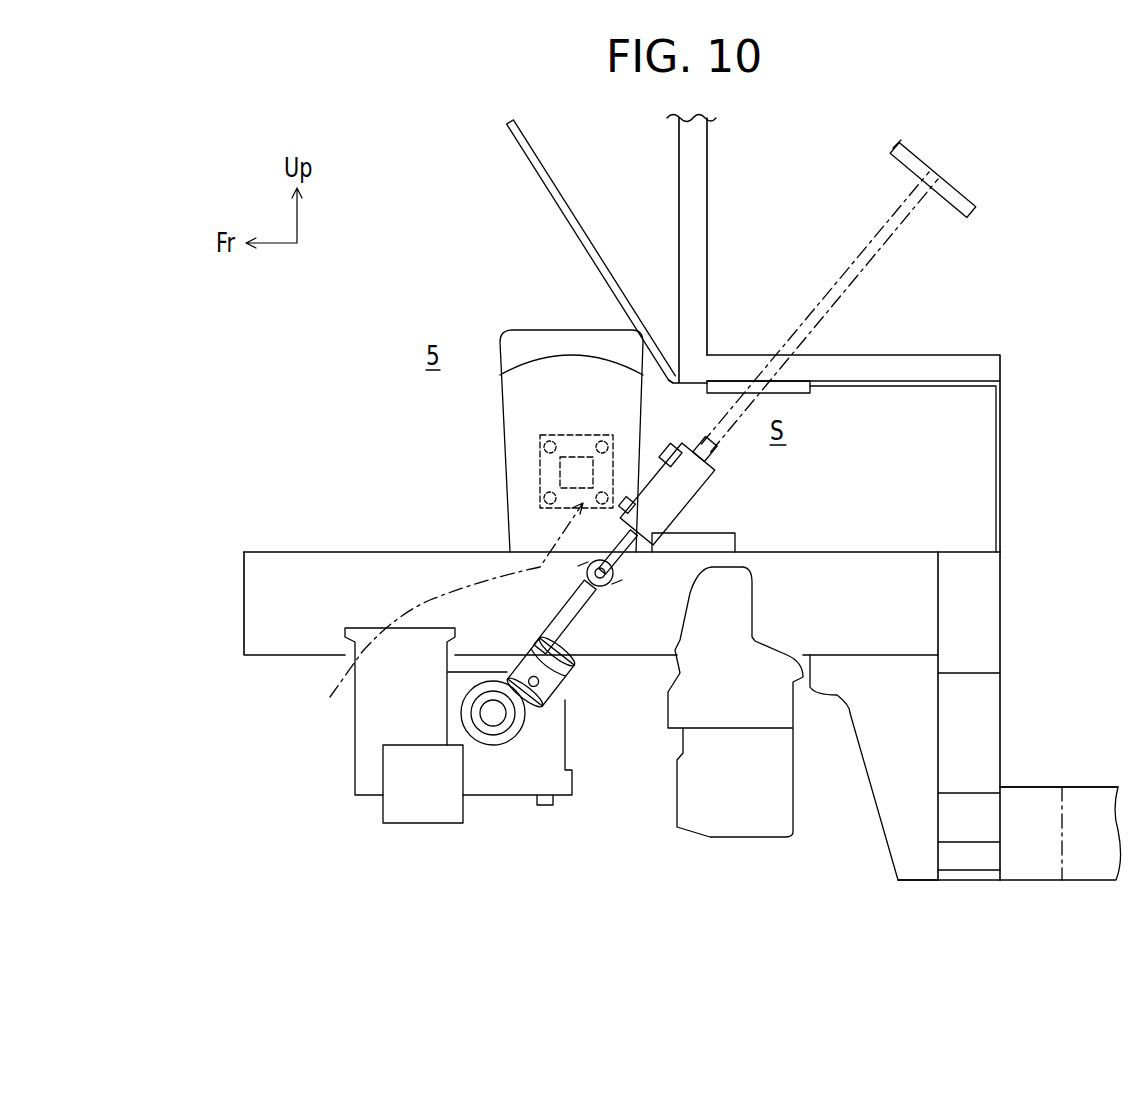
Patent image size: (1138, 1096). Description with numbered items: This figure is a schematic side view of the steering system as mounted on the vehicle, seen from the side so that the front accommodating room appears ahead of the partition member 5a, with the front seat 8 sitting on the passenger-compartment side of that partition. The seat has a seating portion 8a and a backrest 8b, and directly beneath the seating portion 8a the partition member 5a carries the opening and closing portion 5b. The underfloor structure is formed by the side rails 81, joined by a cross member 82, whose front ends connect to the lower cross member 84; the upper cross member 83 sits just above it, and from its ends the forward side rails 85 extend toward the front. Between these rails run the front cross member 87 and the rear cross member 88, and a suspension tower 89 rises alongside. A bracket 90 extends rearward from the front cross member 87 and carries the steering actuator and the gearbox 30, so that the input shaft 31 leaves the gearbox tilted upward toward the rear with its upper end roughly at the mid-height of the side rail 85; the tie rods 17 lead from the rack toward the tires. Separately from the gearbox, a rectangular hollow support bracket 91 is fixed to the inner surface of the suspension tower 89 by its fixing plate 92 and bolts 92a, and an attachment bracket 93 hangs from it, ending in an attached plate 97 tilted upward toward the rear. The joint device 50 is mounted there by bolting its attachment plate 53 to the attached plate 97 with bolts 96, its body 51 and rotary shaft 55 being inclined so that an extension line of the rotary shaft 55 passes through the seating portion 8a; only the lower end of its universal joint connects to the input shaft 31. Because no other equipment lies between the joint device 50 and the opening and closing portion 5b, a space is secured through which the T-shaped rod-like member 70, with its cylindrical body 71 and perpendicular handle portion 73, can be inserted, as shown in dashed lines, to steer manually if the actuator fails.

The partition member 5a is at (1001, 414).
The opening and closing portion 5b is at (800, 394).
The front seat 8 is at (720, 209).
The seating portion 8a is at (933, 355).
The backrest 8b is at (710, 164).
The tie rods 17 is at (493, 715).
The gearbox 30 is at (565, 705).
The input shaft 31 is at (580, 622).
The joint device 50 is at (711, 500).
The body 51 is at (682, 512).
The attachment plate 53 is at (712, 480).
The rotary shaft 55 is at (690, 443).
The rod-like member 70 is at (950, 168).
The body 71 is at (793, 333).
The handle portion 73 is at (897, 138).
The side rails 81 is at (1083, 855).
The cross member 82 is at (1032, 802).
The upper cross member 83 is at (973, 588).
The lower cross member 84 is at (973, 862).
The side rails 85 is at (280, 645).
The front cross member 87 is at (358, 742).
The rear cross member 88 is at (752, 822).
The suspension tower 89 is at (593, 340).
The bracket 90 is at (518, 790).
The support bracket 91 is at (560, 472).
The fixing plate 92 is at (538, 508).
The bolts 92a is at (543, 440).
The attachment bracket 93 is at (447, 619).
The bolts 96 is at (657, 400).
The attached plate 97 is at (640, 490).